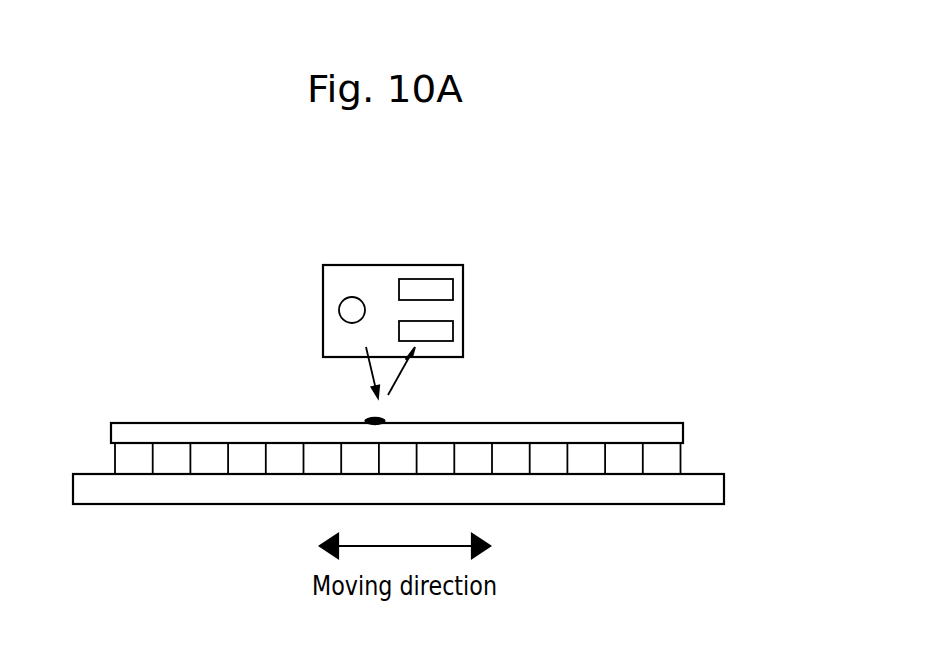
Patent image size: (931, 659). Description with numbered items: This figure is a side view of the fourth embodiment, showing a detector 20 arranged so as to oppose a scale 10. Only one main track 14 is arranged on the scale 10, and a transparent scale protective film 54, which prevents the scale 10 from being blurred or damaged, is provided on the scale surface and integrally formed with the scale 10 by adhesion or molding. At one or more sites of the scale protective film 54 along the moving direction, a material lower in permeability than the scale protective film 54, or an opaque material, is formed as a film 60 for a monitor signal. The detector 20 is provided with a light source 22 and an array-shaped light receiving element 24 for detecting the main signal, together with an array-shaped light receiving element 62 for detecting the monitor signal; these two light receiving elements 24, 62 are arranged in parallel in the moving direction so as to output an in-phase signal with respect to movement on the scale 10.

The scale 10 is at (725, 485).
The main track 14 is at (115, 462).
The detector 20 is at (323, 265).
The light source 22 is at (339, 310).
The light receiving element for detecting main signal 24 is at (453, 328).
The scale protective film 54 is at (645, 422).
The film for a monitor signal 60 is at (368, 419).
The light receiving element for detecting monitor signal 62 is at (429, 279).